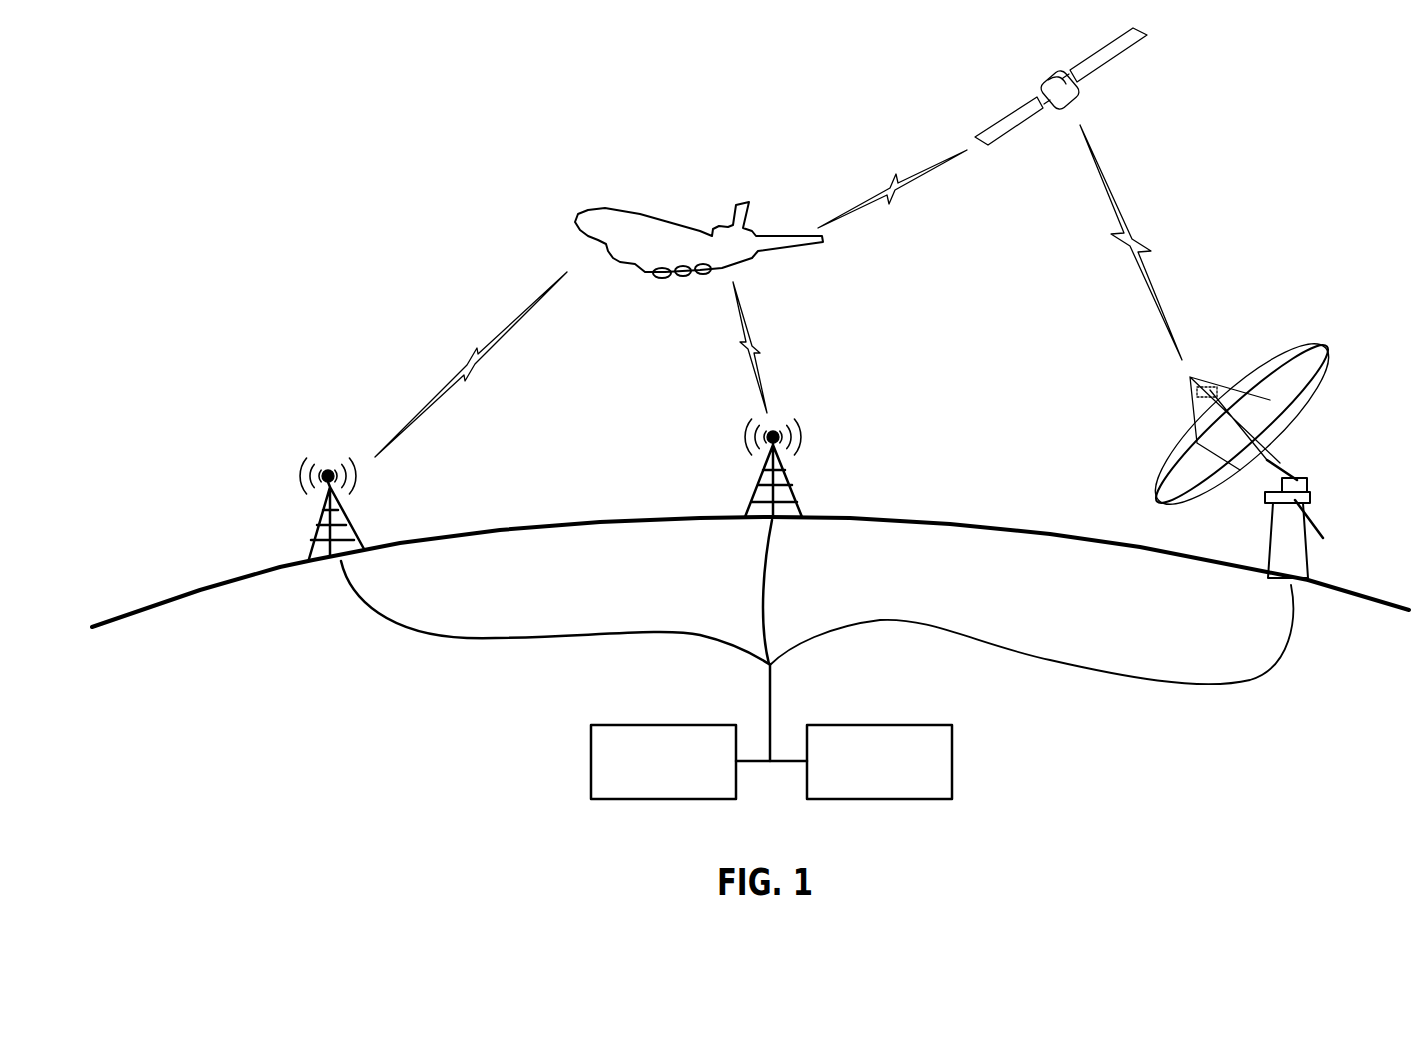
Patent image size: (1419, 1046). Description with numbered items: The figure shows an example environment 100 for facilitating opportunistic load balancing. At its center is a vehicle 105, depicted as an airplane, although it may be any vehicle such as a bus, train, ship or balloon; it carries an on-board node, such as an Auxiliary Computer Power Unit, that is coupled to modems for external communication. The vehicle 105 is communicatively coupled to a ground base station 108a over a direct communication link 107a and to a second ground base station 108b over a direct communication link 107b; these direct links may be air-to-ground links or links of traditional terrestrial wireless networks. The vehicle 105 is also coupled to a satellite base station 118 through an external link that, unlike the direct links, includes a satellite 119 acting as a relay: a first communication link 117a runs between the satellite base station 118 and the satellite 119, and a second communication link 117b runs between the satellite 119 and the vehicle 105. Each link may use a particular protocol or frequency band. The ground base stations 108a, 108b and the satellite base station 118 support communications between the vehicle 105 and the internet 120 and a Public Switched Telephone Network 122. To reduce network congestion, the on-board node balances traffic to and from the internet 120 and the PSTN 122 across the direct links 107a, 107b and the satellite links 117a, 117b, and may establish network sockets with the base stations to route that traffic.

The environment 100 is at (521, 125).
The vehicle 105 is at (623, 212).
The direct communication link 107a is at (467, 358).
The direct communication link 107b is at (753, 325).
The ground base station 108a is at (347, 512).
The ground base station 108b is at (787, 475).
The first communication link 117a is at (1142, 236).
The second communication link 117b is at (925, 172).
The satellite base station 118 is at (1307, 484).
The satellite 119 is at (1052, 82).
The internet 120 is at (590, 753).
The Public Switched Telephone Network (PSTN) 122 is at (953, 752).